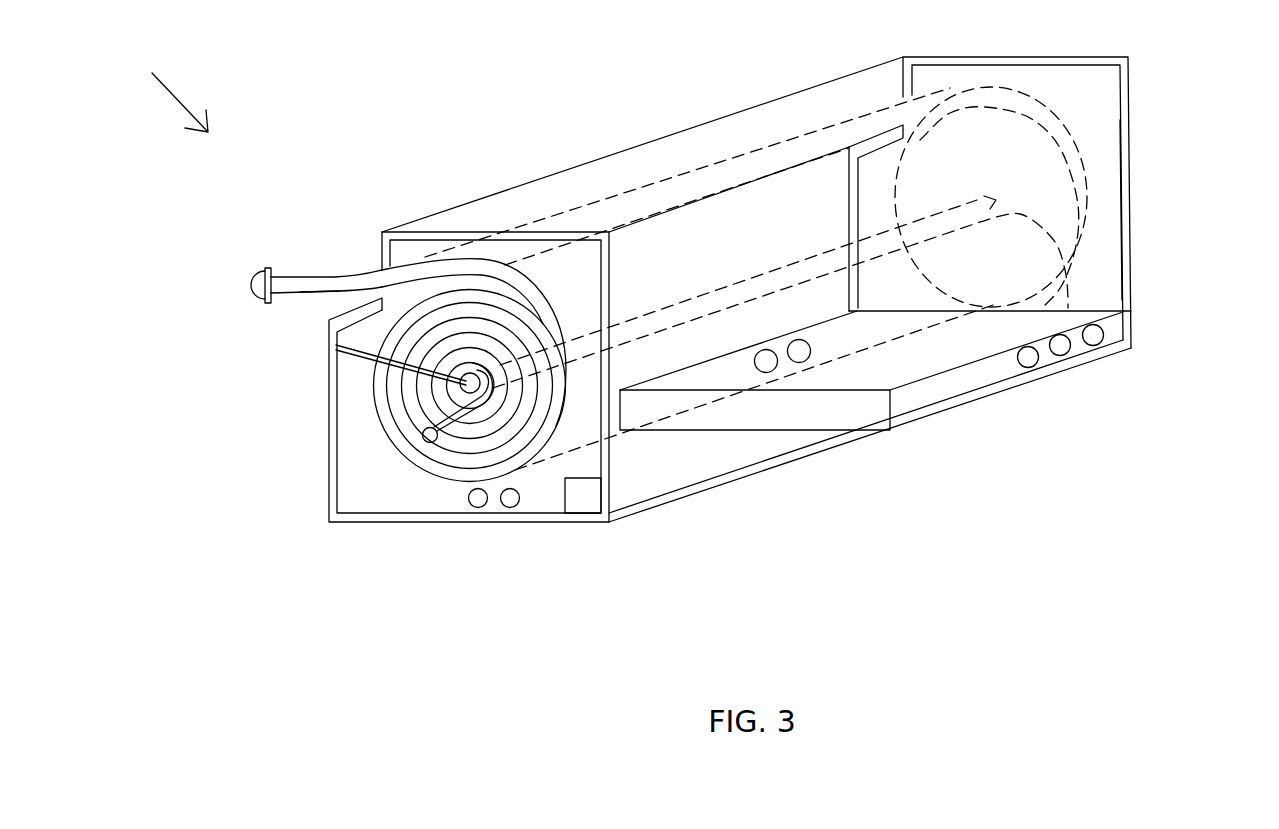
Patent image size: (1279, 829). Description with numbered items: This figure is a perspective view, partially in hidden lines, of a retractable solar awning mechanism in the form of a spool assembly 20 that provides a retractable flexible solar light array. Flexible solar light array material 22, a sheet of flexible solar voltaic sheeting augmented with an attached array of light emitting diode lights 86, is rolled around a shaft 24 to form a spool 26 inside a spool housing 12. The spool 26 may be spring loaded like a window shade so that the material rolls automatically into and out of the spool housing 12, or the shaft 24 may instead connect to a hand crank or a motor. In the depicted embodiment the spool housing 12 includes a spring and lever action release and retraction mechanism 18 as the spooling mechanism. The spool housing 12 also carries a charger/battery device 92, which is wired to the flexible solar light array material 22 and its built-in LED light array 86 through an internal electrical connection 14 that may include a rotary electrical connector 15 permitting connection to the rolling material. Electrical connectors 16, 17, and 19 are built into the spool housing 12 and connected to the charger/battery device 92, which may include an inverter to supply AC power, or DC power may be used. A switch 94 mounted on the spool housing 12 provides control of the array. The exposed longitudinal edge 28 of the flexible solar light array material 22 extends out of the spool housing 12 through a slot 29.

The spool housing 12 is at (1014, 57).
The internal electrical connection 14 is at (364, 352).
The rotary electrical connector 15 is at (997, 202).
The electrical connector 16 is at (1030, 362).
The electrical connector 17 is at (766, 373).
The spring and lever action release and retraction mechanism 18 is at (428, 441).
The electrical connector 19 is at (480, 508).
The spool assembly 20 is at (164, 87).
The flexible solar light array material 22 is at (335, 278).
The shaft 24 is at (727, 280).
The spool 26 is at (392, 418).
The exposed longitudinal edge 28 is at (258, 283).
The slot 29 is at (497, 250).
The light emitting diode lights 86 is at (300, 293).
The charger/battery device 92 is at (955, 383).
The switch 94 is at (585, 500).